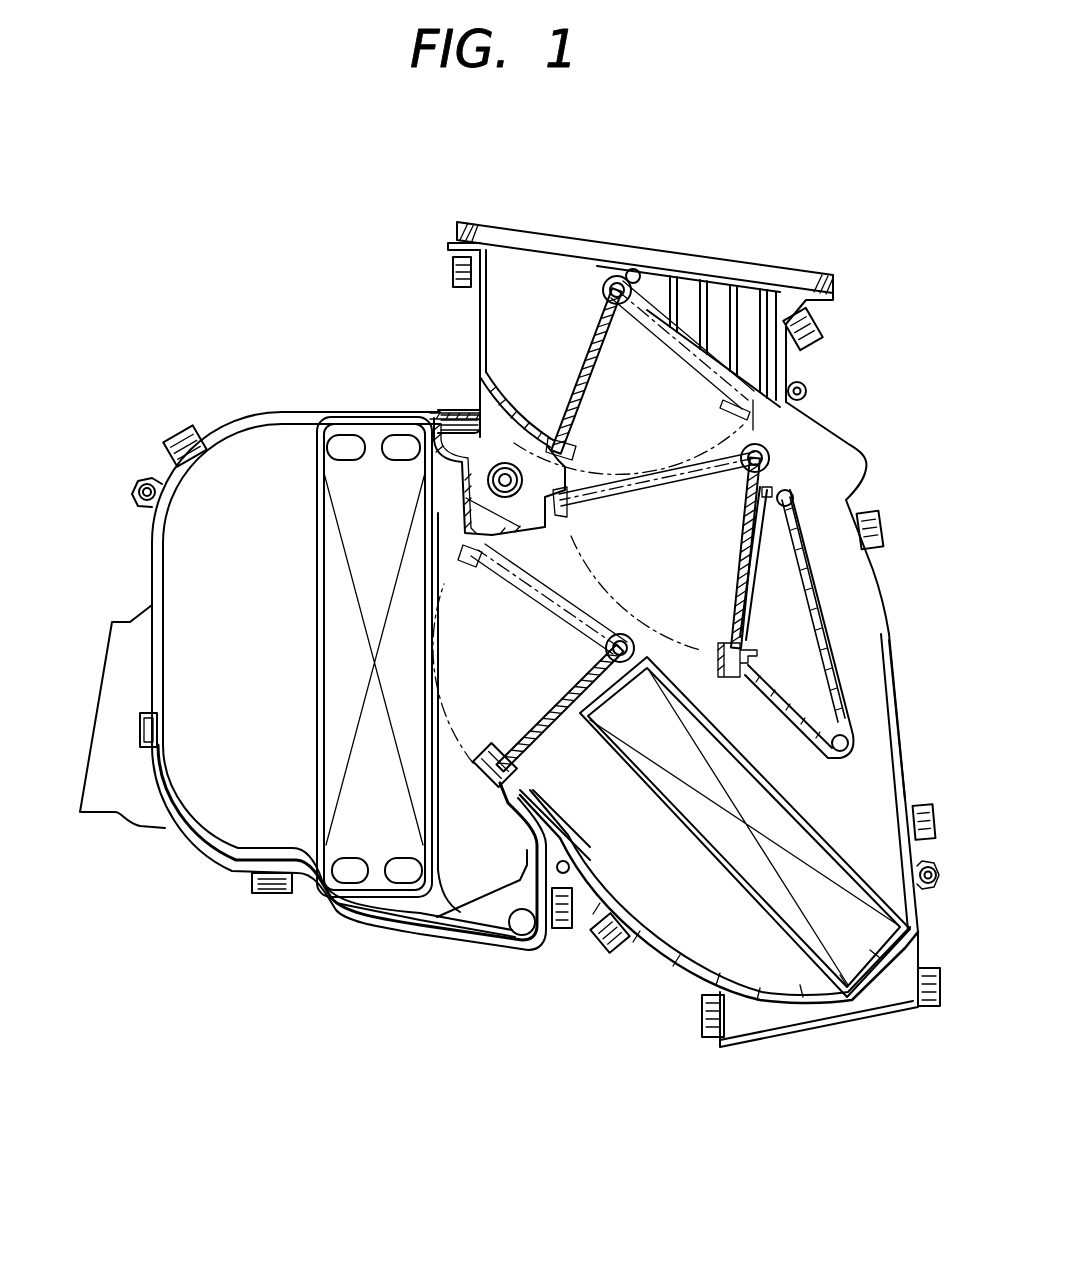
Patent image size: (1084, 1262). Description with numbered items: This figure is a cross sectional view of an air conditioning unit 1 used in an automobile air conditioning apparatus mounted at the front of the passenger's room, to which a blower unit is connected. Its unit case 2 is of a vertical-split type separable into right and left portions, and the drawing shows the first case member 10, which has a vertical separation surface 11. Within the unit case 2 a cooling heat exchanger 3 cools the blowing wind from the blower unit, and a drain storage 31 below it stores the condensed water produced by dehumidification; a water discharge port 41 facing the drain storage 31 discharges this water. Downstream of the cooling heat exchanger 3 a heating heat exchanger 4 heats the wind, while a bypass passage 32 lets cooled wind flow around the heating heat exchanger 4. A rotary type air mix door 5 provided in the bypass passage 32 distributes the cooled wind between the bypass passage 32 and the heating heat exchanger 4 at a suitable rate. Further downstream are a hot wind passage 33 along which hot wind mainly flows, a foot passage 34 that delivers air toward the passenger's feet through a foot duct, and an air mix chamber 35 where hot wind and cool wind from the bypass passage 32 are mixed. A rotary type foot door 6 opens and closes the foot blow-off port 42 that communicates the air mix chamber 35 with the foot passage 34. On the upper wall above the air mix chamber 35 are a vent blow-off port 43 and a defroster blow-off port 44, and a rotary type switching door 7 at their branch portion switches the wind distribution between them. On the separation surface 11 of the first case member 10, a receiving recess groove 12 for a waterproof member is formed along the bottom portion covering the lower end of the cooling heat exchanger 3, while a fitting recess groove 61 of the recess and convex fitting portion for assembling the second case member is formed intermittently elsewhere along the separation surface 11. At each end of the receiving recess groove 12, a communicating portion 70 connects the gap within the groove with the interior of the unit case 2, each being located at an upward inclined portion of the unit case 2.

The air conditioning unit 1 is at (640, 252).
The unit case 2 is at (820, 432).
The first case member 10 is at (510, 645).
The cooling heat exchanger 3 is at (318, 672).
The heating heat exchanger 4 is at (680, 820).
The rotary type air mix door 5 is at (556, 700).
The rotary type foot door 6 is at (738, 563).
The rotary type switching door 7 is at (590, 393).
The vertical separation surface 11 is at (148, 500).
The receiving recess groove 12 is at (373, 918).
The drain storage 31 is at (472, 932).
The bypass passage 32 is at (505, 640).
The hot wind passage 33 is at (843, 651).
The foot passage 34 is at (772, 651).
The air mix chamber 35 is at (639, 545).
The water discharge port 41 is at (527, 940).
The foot blow-off port 42 is at (782, 547).
The vent blow-off port 43 is at (722, 283).
The defroster blow-off port 44 is at (548, 246).
The fitting recess groove 61 is at (478, 328).
The communicating portion 70 is at (165, 777).